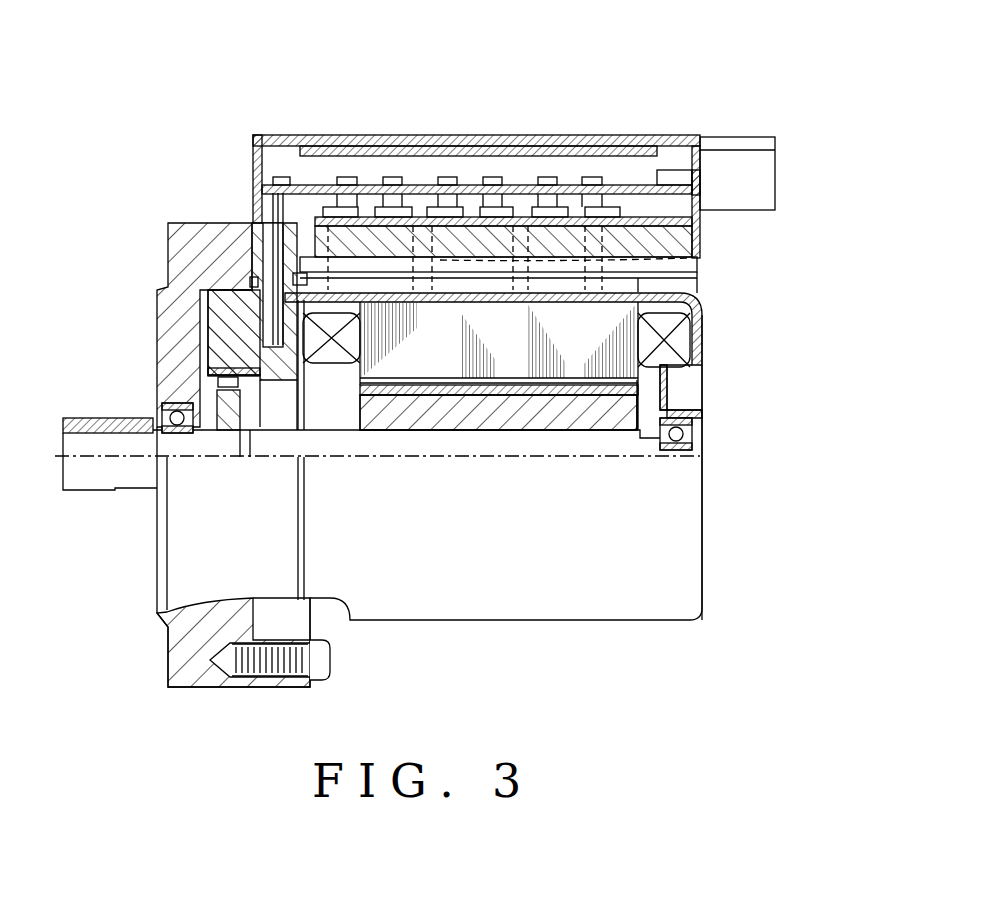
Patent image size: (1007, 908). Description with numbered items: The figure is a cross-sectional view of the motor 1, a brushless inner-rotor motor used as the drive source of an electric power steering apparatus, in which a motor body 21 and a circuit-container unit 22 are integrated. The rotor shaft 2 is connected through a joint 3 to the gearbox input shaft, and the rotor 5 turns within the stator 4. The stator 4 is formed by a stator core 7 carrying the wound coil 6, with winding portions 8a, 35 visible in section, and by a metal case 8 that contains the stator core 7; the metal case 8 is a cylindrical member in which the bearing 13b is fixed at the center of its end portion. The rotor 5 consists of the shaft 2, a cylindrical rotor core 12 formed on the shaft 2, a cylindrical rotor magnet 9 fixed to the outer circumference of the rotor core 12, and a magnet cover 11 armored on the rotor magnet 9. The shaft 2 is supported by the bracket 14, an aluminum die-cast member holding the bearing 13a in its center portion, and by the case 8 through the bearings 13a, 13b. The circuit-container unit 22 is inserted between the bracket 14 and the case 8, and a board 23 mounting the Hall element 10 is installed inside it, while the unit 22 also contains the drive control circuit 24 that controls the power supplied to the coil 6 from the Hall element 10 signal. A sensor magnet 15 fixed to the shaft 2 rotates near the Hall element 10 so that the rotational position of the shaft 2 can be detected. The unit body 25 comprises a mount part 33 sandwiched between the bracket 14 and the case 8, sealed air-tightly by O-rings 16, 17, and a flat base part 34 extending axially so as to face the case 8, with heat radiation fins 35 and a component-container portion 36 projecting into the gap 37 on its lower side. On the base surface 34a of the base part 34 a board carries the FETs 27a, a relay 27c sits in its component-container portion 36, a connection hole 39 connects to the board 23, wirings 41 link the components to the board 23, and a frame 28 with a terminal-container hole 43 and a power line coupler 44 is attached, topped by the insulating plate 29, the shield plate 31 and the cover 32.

The motor 1 is at (136, 158).
The rotor shaft 2 is at (340, 442).
The joint 3 is at (88, 415).
The stator 4 is at (693, 318).
The rotor 5 is at (638, 404).
The coil 6 is at (682, 342).
The stator core 7 is at (517, 380).
The metal case 8 is at (668, 370).
The stator winding 8a is at (483, 286).
The rotor magnet 9 is at (570, 390).
The Hall element 10 is at (218, 382).
The magnet cover 11 is at (423, 393).
The rotor core 12 is at (477, 418).
The bearing 13a is at (178, 437).
The bearing 13b is at (670, 452).
The bracket 14 is at (193, 236).
The sensor magnet 15 is at (248, 437).
The O-ring 16 is at (250, 280).
The O-ring 17 is at (285, 210).
The motor body 21 is at (620, 598).
The circuit-container unit 22 is at (680, 137).
The board 23 is at (250, 356).
The drive control circuit 24 is at (607, 180).
The unit body 25 is at (225, 321).
The FETs 27a is at (498, 210).
The relay 27c is at (641, 258).
The frame 28 is at (698, 175).
The insulating plate 29 is at (397, 177).
The shield plate 31 is at (433, 185).
The cover 32 is at (563, 200).
The mount part 33 is at (258, 240).
The base part 34 is at (643, 245).
The base surface 34a is at (703, 183).
The heat radiation fins 35 is at (563, 267).
The plate 36 is at (650, 278).
The gap 37 is at (678, 283).
The connection hole 39 is at (268, 272).
The wirings 41 is at (318, 270).
The terminal-container hole 43 is at (478, 150).
The power line coupler 44 is at (743, 160).